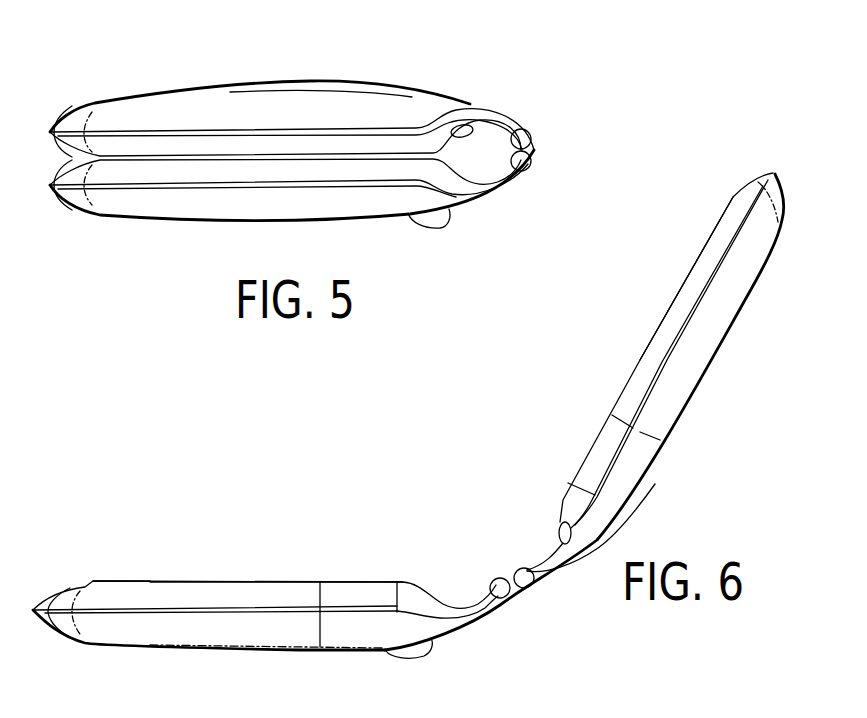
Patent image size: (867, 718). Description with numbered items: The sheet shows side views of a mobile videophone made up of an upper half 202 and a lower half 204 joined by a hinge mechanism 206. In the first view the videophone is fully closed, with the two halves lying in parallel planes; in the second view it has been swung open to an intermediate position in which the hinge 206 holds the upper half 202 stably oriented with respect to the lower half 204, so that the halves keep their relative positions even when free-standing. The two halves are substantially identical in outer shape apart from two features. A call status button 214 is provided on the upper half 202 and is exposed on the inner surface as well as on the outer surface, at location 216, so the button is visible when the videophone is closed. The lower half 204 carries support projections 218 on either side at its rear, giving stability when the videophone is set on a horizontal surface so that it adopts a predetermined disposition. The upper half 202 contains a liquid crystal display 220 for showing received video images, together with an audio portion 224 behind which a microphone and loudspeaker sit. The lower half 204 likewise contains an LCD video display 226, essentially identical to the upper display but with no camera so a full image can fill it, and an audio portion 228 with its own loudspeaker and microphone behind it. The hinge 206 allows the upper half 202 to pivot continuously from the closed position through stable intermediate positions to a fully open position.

In FIG. 5, the upper half 202 is at (236, 82).
In FIG. 6, the upper half 202 is at (697, 369).
In FIG. 5, the lower half 204 is at (182, 208).
In FIG. 6, the lower half 204 is at (193, 627).
In FIG. 5, the hinge mechanism 206 is at (531, 150).
In FIG. 6, the hinge mechanism 206 is at (517, 594).
In FIG. 5, the call status button 214 is at (465, 126).
In FIG. 6, the call status button 214 is at (560, 535).
In FIG. 5, the location of call status button on outer surface 216 is at (453, 81).
In FIG. 5, the support projections 218 is at (446, 222).
In FIG. 6, the support projections 218 is at (432, 652).
In FIG. 6, the liquid crystal display 220 is at (652, 338).
In FIG. 6, the audio portion 224 is at (708, 240).
In FIG. 6, the LCD video display 226 is at (277, 583).
In FIG. 6, the audio portion 228 is at (153, 580).